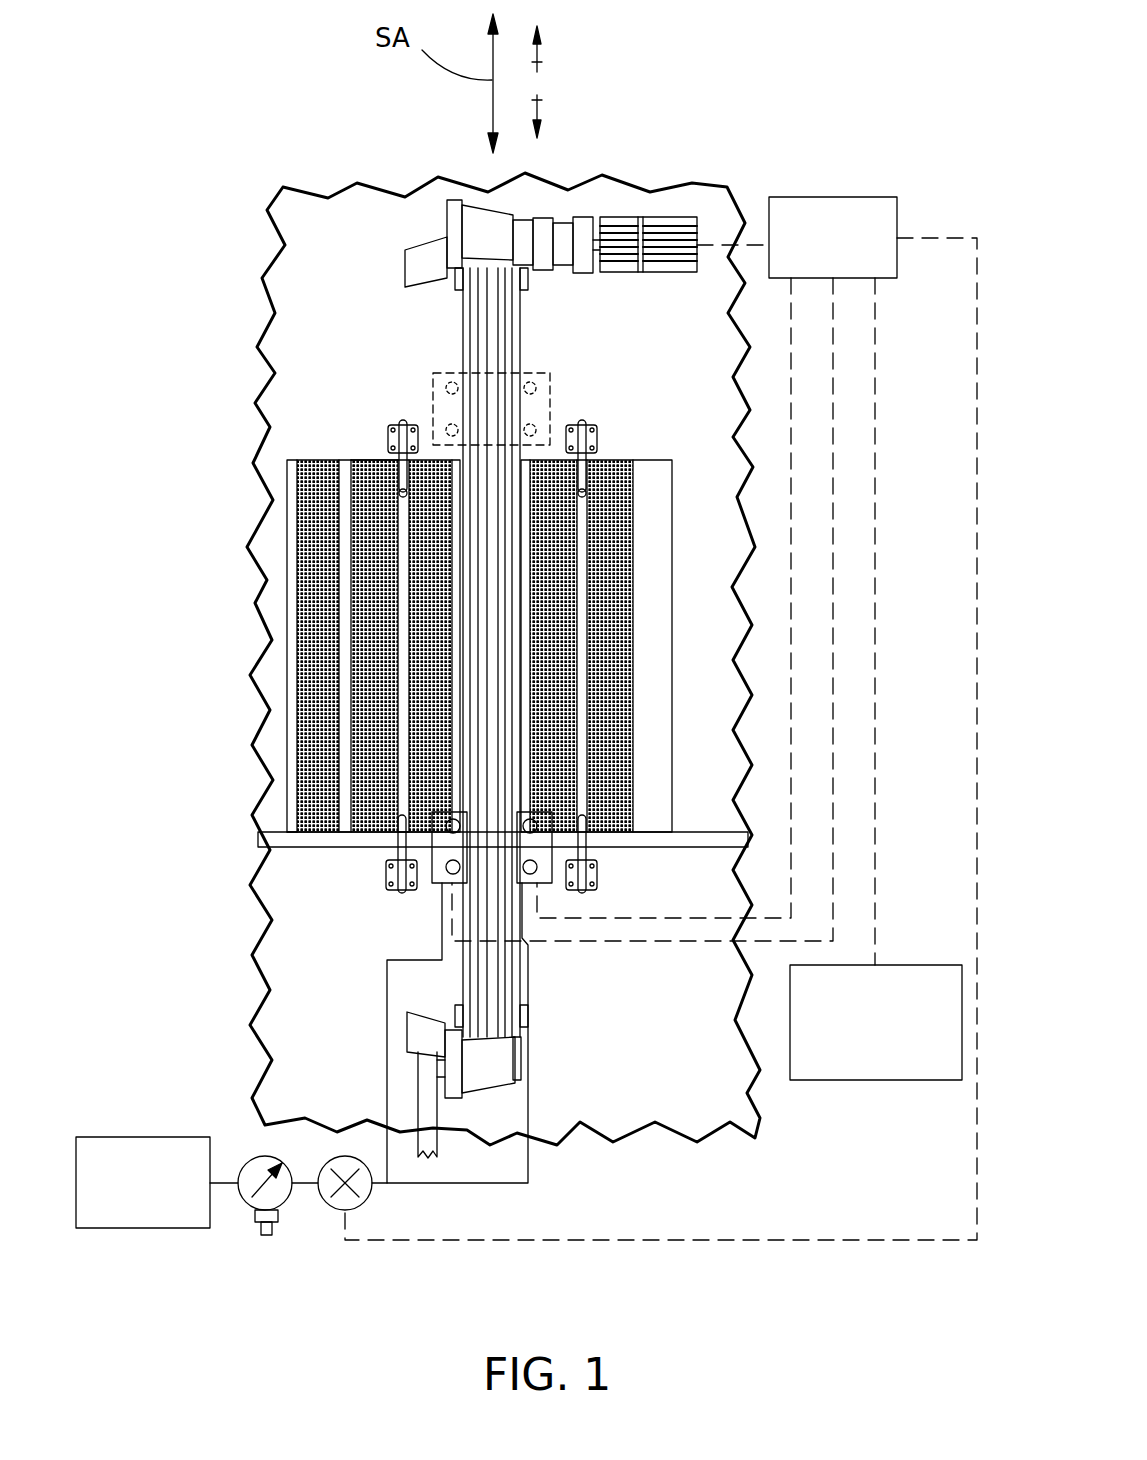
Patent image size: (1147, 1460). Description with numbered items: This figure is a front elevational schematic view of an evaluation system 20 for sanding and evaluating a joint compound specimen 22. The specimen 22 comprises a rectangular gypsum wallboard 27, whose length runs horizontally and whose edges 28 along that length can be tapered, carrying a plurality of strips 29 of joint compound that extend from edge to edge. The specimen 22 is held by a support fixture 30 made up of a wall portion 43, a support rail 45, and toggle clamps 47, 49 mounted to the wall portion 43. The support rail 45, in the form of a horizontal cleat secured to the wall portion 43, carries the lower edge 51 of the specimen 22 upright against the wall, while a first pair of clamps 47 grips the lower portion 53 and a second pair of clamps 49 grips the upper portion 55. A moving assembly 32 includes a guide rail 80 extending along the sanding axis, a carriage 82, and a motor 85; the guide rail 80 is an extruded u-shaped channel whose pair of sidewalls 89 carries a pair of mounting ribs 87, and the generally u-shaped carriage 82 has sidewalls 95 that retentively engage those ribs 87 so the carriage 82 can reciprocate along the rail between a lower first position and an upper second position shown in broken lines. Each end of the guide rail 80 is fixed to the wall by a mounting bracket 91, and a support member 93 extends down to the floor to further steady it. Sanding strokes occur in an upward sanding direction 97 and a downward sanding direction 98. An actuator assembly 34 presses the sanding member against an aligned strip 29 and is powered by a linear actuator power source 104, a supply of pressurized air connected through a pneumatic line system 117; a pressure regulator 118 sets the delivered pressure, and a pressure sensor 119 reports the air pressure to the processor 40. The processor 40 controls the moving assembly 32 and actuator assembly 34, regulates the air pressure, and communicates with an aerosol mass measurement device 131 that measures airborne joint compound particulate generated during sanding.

The evaluation system 20 is at (239, 122).
The joint compound specimen 22 is at (320, 462).
The gypsum wallboard 27 is at (655, 495).
The edges 28 is at (345, 470).
The strips of joint compound 29 is at (320, 502).
The support fixture 30 is at (366, 868).
The moving assembly 32 is at (388, 252).
The actuator assembly 34 is at (165, 1124).
The processor 40 is at (830, 197).
The wall portion 43 is at (630, 355).
The support rail 45 is at (283, 837).
The clamps (first pair) 47 is at (386, 880).
The clamps (second pair) 49 is at (400, 428).
The lower edge 51 is at (318, 830).
The lower portion 53 is at (378, 813).
The upper portion 55 is at (372, 497).
The guide rail 80 is at (492, 320).
The carriage 82 is at (543, 872).
The motor 85 is at (630, 213).
The mounting ribs 87 is at (473, 800).
The sidewalls 89 is at (458, 795).
The mounting bracket 91 is at (446, 220).
The support member 93 is at (422, 1150).
The sidewalls (of carriage) 95 is at (445, 875).
The upward sanding direction 97 is at (540, 62).
The downward sanding direction 98 is at (540, 100).
The linear actuator power source 104 is at (93, 1137).
The pneumatic line system 117 is at (306, 1185).
The pressure regulator 118 is at (250, 1205).
The pressure sensor 119 is at (346, 1210).
The aerosol mass measurement device 131 is at (893, 1082).